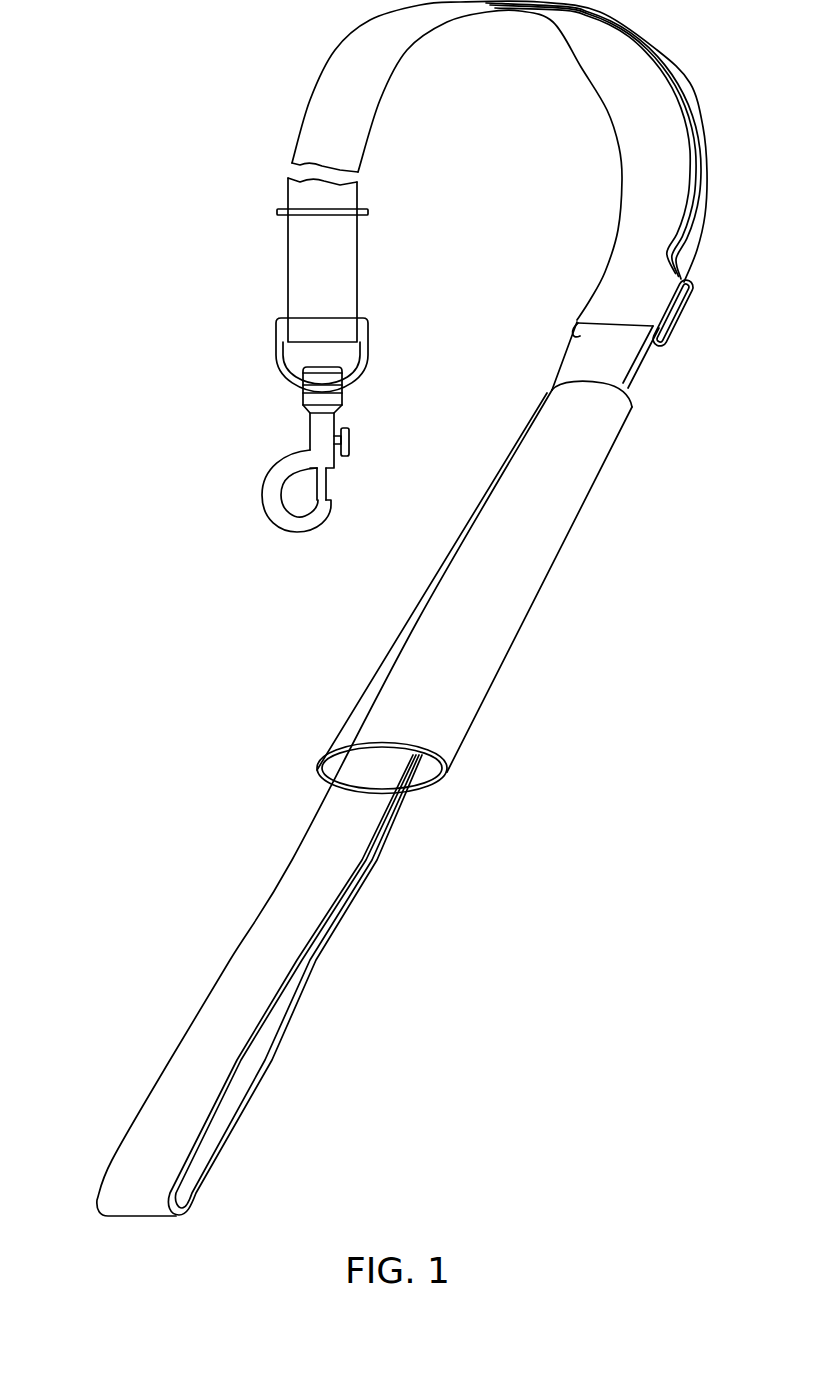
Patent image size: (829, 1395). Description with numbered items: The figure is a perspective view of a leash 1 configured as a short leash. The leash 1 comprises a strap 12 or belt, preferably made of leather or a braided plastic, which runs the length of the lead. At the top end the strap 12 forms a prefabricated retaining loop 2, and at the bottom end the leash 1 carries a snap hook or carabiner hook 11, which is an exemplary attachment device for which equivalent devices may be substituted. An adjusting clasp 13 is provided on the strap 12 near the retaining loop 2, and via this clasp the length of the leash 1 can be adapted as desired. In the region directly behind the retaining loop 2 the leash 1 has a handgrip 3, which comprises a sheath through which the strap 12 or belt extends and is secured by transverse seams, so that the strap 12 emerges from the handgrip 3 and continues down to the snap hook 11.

The leash 1 is at (420, 608).
The retaining loop 2 is at (236, 1098).
The handgrip 3 is at (505, 648).
The snap hook 11 is at (262, 490).
The strap 12 is at (568, 357).
The adjusting clasp 13 is at (686, 305).